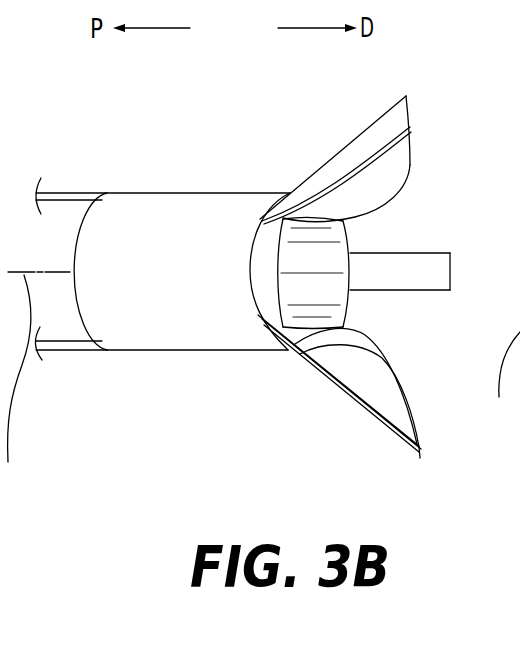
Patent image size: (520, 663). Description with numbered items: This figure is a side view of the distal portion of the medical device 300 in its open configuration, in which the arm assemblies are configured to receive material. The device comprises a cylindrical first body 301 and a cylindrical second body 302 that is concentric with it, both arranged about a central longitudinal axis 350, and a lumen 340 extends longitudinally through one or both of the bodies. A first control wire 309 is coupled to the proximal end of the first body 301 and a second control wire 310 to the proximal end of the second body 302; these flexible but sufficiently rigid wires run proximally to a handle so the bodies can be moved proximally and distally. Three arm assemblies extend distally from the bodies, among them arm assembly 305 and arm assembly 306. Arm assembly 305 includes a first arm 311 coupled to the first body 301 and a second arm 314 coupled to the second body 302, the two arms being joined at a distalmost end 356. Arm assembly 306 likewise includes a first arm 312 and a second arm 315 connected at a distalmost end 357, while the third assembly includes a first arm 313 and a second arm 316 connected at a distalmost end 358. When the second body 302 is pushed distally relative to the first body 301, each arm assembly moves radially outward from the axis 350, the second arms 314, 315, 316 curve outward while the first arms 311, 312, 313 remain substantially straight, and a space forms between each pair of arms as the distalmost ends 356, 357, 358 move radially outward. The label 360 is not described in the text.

The medical device 300 is at (0, 72).
The first body 301 is at (208, 335).
The second body 302 is at (337, 243).
The arm assembly 305 is at (320, 421).
The arm assembly 306 is at (434, 114).
The first control wire 309 is at (80, 349).
The second control wire 310 is at (62, 197).
The first arm 311 is at (392, 432).
The first arm 312 is at (368, 139).
The first arm 313 is at (451, 233).
The second arm 314 is at (410, 413).
The second arm 315 is at (408, 157).
The second arm 316 is at (427, 283).
The lumen 340 is at (330, 288).
The central longitudinal axis 350 is at (261, 385).
The distalmost end 356 is at (417, 453).
The distalmost end 357 is at (417, 114).
The distalmost end 358 is at (451, 268).
The proximal force direction 360 is at (468, 275).